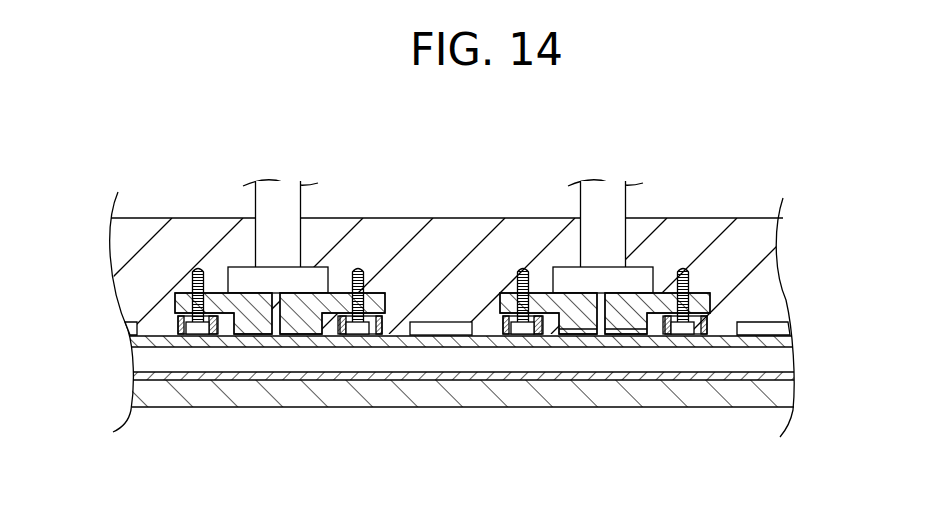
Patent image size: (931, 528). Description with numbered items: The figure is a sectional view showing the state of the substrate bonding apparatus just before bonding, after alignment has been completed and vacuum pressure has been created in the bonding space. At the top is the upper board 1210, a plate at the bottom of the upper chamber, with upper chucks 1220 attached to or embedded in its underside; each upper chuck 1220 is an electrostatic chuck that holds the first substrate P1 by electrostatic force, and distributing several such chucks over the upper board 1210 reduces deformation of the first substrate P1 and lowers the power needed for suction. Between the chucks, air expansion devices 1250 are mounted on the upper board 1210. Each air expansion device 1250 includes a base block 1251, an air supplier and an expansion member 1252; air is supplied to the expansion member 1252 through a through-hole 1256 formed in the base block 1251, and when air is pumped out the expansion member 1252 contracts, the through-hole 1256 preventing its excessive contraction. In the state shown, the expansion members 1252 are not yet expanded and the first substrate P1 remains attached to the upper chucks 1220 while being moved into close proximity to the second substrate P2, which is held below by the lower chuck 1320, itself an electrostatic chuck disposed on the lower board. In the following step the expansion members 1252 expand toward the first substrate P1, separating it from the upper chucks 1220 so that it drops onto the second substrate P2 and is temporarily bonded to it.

The upper board 1210 is at (383, 230).
The upper chuck 1220 is at (447, 322).
The air expansion device 1250 is at (512, 304).
The base block 1251 is at (665, 296).
The expansion member 1252 is at (634, 334).
The through-hole 1256 is at (588, 330).
The lower chuck 1320 is at (374, 389).
The first substrate P1 is at (242, 340).
The second substrate P2 is at (300, 377).